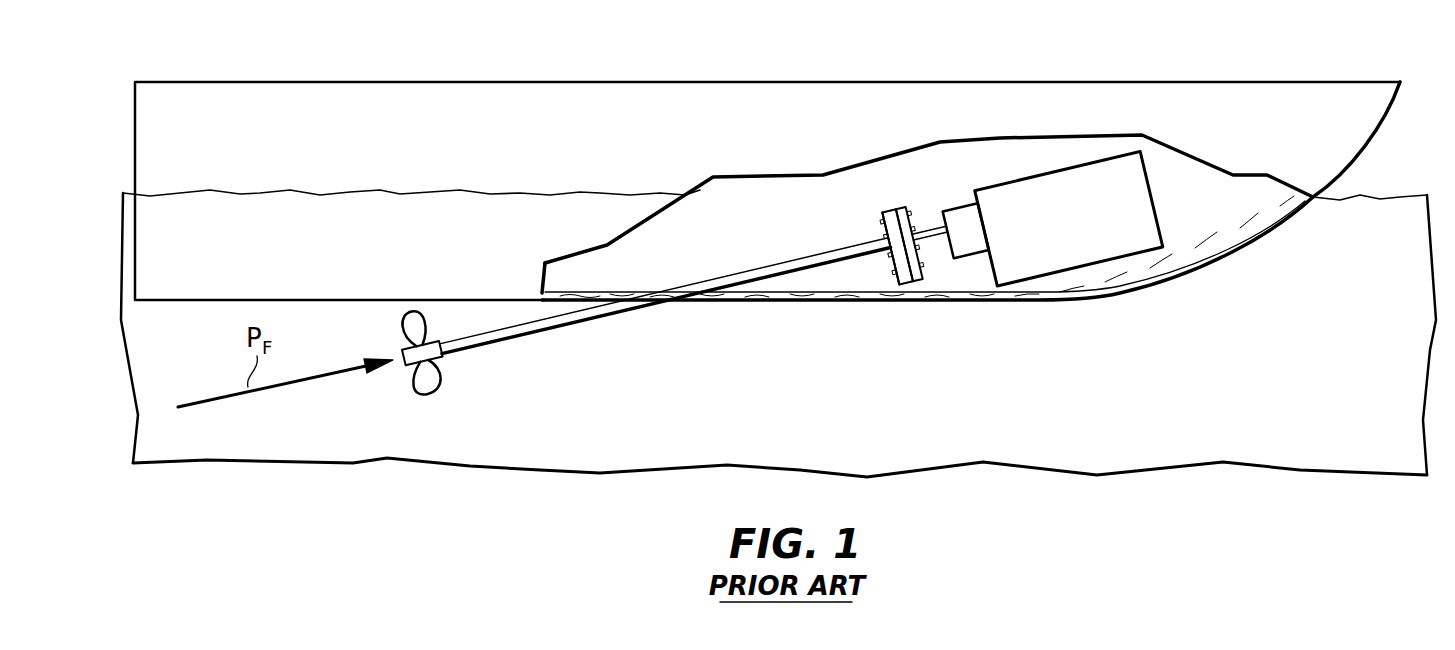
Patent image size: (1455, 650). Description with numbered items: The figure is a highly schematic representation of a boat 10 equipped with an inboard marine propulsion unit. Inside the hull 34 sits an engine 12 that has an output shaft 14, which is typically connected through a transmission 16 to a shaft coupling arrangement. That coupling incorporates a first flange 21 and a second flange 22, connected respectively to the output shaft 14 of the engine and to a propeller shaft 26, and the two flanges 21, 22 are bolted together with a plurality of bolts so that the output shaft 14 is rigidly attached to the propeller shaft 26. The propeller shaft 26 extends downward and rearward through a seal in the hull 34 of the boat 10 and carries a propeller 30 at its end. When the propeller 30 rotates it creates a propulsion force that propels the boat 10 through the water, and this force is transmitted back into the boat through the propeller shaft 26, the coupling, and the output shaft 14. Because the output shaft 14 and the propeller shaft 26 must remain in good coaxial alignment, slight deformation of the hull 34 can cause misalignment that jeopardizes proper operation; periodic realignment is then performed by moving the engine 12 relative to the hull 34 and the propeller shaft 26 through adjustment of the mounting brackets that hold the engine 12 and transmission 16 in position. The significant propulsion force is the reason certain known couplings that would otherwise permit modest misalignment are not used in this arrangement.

The boat 10 is at (340, 81).
The engine 12 is at (1143, 223).
The output shaft 14 is at (938, 248).
The transmission 16 is at (960, 223).
The first flange 21 is at (912, 212).
The second flange 22 is at (888, 233).
The propeller shaft 26 is at (757, 272).
The propeller 30 is at (430, 380).
The hull 34 is at (1360, 151).